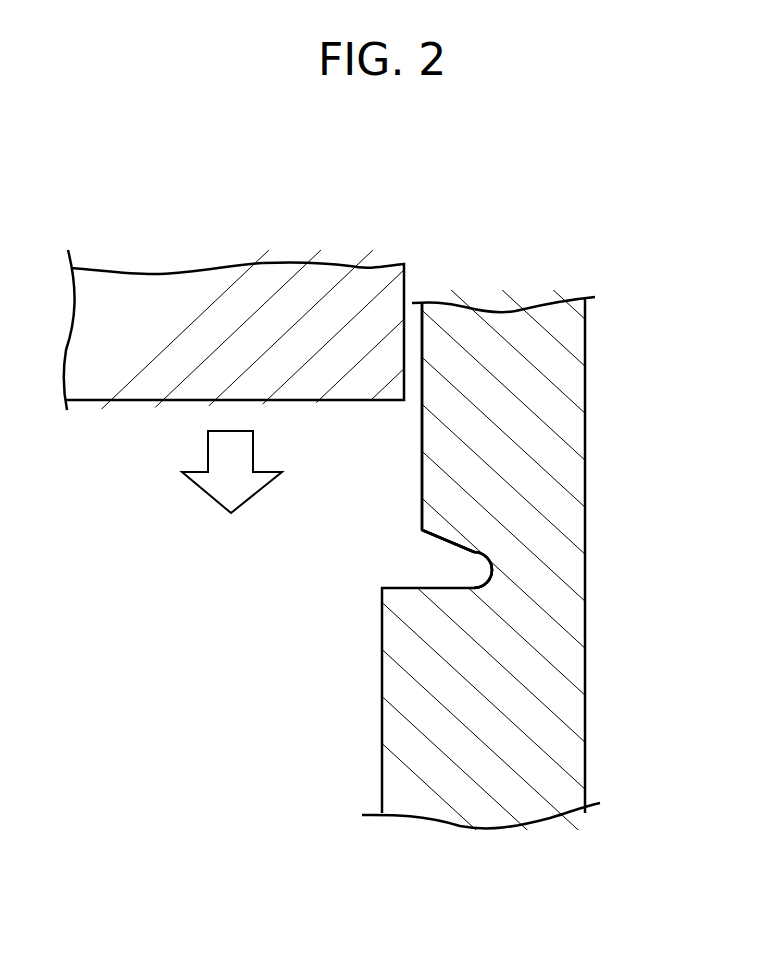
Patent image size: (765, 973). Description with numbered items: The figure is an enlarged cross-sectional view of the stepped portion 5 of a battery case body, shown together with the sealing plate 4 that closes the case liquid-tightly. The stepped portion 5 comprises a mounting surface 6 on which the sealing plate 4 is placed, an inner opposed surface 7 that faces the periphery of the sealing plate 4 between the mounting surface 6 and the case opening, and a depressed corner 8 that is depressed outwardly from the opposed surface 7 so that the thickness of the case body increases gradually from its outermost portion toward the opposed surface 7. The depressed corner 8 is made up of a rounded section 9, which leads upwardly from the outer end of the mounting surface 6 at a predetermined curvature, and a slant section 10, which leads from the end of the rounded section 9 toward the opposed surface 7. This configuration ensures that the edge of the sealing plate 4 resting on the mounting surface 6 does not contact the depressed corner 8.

The sealing plate 4 is at (328, 278).
The stepped portion 5 is at (549, 492).
The mounting surface 6 is at (411, 588).
The opposed surface 7 is at (422, 443).
The depressed corner 8 is at (652, 505).
The rounded section 9 is at (492, 572).
The slant section 10 is at (473, 552).